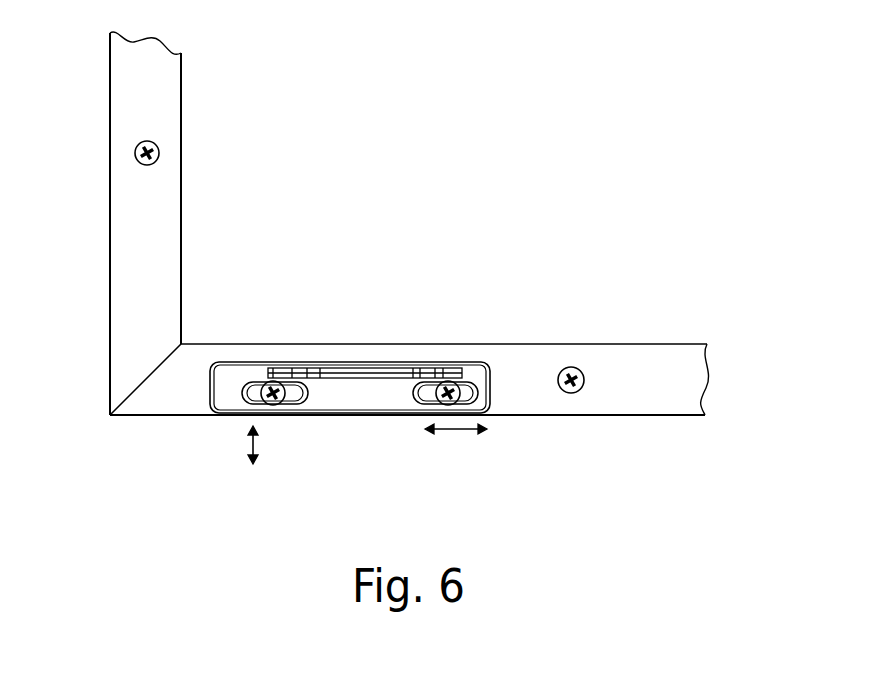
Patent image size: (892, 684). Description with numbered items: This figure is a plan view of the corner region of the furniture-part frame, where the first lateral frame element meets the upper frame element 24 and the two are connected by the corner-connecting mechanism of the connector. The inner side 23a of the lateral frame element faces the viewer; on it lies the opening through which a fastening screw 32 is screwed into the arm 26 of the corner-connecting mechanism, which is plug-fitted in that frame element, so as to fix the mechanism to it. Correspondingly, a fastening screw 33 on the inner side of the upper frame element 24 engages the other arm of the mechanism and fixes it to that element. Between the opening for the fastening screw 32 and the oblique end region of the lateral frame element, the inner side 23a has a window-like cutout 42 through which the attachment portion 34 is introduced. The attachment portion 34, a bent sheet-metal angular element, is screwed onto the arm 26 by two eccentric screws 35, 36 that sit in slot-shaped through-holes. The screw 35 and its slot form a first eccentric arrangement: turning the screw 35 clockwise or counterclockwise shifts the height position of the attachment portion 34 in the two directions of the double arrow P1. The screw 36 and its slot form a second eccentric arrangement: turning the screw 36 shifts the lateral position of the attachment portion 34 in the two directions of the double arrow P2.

The upper frame element 24 is at (181, 87).
The inner side of the frame element 23a is at (668, 368).
The fastening screw 33 is at (160, 163).
The fastening screw 32 is at (572, 368).
The arm 26 is at (238, 381).
The window-like cutout 42 is at (465, 368).
The attachment portion 34 is at (377, 386).
The screw 36 is at (276, 404).
The screw 35 is at (457, 396).
The double arrow P1 is at (460, 434).
The double arrow P2 is at (248, 445).